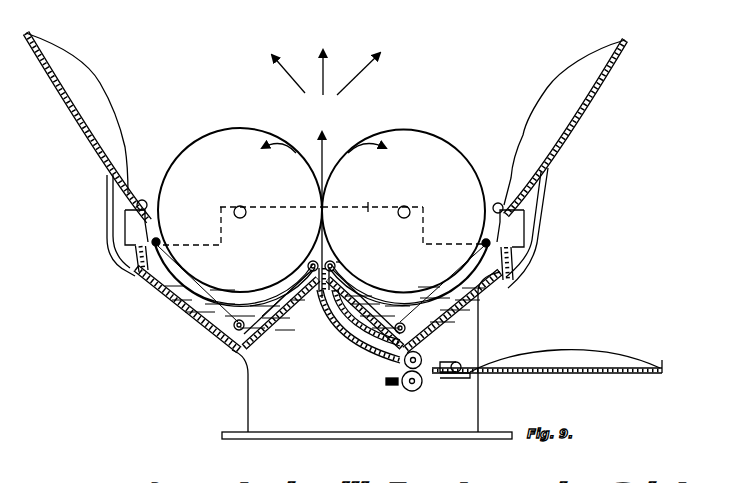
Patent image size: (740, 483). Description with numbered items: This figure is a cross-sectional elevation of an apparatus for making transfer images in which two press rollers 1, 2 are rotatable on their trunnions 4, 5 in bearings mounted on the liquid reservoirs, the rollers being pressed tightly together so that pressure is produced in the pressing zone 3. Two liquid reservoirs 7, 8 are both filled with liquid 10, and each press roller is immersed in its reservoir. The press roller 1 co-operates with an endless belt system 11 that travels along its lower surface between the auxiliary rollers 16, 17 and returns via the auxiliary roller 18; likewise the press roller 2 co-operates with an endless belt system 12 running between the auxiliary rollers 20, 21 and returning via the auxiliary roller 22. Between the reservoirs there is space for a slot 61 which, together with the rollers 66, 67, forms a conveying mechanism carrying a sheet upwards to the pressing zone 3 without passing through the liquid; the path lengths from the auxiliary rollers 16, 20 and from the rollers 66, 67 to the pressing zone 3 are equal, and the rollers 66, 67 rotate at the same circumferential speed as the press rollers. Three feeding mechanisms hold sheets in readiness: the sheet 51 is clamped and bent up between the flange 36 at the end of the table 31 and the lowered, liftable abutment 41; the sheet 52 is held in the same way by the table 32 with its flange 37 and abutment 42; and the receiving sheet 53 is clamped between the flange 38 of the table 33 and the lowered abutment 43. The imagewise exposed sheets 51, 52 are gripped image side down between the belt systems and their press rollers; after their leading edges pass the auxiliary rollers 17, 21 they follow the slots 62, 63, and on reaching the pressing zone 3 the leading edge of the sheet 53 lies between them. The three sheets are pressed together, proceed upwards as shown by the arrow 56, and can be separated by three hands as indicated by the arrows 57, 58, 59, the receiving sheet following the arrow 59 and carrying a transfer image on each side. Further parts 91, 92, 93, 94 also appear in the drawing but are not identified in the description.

The press roller 1 is at (177, 152).
The press roller 2 is at (472, 162).
The pressing zone 3 is at (315, 207).
The trunnion 4 is at (237, 205).
The trunnion 5 is at (401, 205).
The liquid reservoir 7 is at (166, 298).
The liquid reservoir 8 is at (487, 290).
The liquid 10 is at (190, 314).
The endless belt system 11 is at (206, 300).
The endless belt system 12 is at (424, 298).
The auxiliary roller 16 is at (163, 248).
The auxiliary roller 17 is at (306, 267).
The auxiliary roller 18 is at (258, 337).
The auxiliary roller 20 is at (479, 249).
The auxiliary roller 21 is at (337, 266).
The auxiliary roller 22 is at (418, 330).
The table 31 is at (82, 128).
The table 32 is at (556, 142).
The table 33 is at (498, 375).
The flange 36 is at (30, 33).
The flange 37 is at (624, 40).
The flange 38 is at (658, 364).
The abutment 41 is at (152, 212).
The abutment 42 is at (497, 210).
The abutment 43 is at (458, 362).
The sheet 51 is at (103, 88).
The sheet 52 is at (546, 88).
The receiving sheet 53 is at (578, 346).
The arrow 56 is at (324, 160).
The arrow 57 is at (290, 78).
The arrow 58 is at (348, 90).
The arrow 59 is at (334, 72).
The slot 61 is at (352, 360).
The slot 62 is at (312, 260).
The slot 63 is at (333, 260).
The roller 66 is at (422, 376).
The roller 67 is at (386, 385).
The right housing wall 91 is at (545, 198).
The left housing wall 92 is at (107, 193).
The stand 93 is at (256, 378).
The mark 94 is at (368, 206).